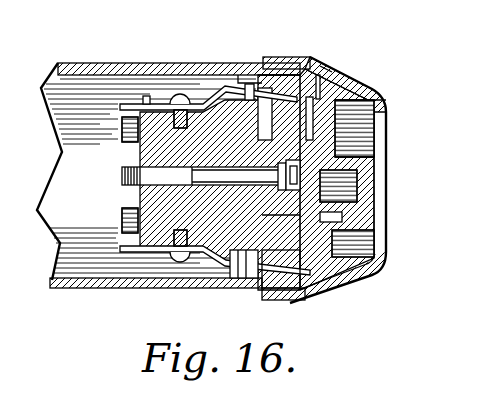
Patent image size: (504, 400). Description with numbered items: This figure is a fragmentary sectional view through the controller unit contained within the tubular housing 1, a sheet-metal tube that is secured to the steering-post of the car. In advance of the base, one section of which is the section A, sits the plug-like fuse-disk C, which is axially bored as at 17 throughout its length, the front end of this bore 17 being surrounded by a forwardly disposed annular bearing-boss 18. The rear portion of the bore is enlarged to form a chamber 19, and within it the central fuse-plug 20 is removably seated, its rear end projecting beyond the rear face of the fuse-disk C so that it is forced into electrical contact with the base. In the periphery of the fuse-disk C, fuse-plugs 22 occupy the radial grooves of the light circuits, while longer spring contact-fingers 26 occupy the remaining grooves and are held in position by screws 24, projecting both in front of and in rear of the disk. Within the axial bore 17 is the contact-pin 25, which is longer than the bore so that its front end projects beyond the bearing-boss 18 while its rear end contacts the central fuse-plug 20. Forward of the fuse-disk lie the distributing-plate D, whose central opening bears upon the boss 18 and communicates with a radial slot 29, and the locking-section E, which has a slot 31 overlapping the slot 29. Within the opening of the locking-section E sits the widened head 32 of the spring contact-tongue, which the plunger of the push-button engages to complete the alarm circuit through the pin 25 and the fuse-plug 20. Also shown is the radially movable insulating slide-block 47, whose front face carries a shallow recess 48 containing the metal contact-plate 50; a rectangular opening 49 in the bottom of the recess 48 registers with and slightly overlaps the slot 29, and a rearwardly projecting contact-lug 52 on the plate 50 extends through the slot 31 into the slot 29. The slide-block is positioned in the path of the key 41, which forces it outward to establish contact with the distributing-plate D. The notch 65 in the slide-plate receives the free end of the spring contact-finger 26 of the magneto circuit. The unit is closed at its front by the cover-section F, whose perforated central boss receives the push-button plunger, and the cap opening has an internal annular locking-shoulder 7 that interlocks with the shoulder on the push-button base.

The tubular housing 1 is at (52, 121).
The fuse-disk C is at (143, 258).
The base section A is at (340, 83).
The locking-section E is at (331, 72).
The cover-section F is at (367, 88).
The distributing-plate D is at (307, 100).
The notch 65 is at (327, 73).
The internal annular locking-shoulder 7 is at (387, 116).
The head of spring contact-tongue 32 is at (356, 157).
The key 41 is at (357, 200).
The slide-block 47 is at (337, 218).
The rectangular opening 49 is at (370, 237).
The recess 48 is at (383, 255).
The contact-plate 50 is at (350, 283).
The axial bore 17 is at (200, 104).
The bearing-boss 18 is at (257, 120).
The spring contact-finger 26 is at (143, 104).
The screw 24 is at (174, 95).
The fuse-plug 22 is at (118, 141).
The central fuse-plug 20 is at (123, 177).
The chamber 19 is at (128, 167).
The contact-pin 25 is at (240, 280).
The radial slot 29 is at (272, 290).
The contact-lug 52 is at (307, 294).
The slot 31 is at (316, 294).